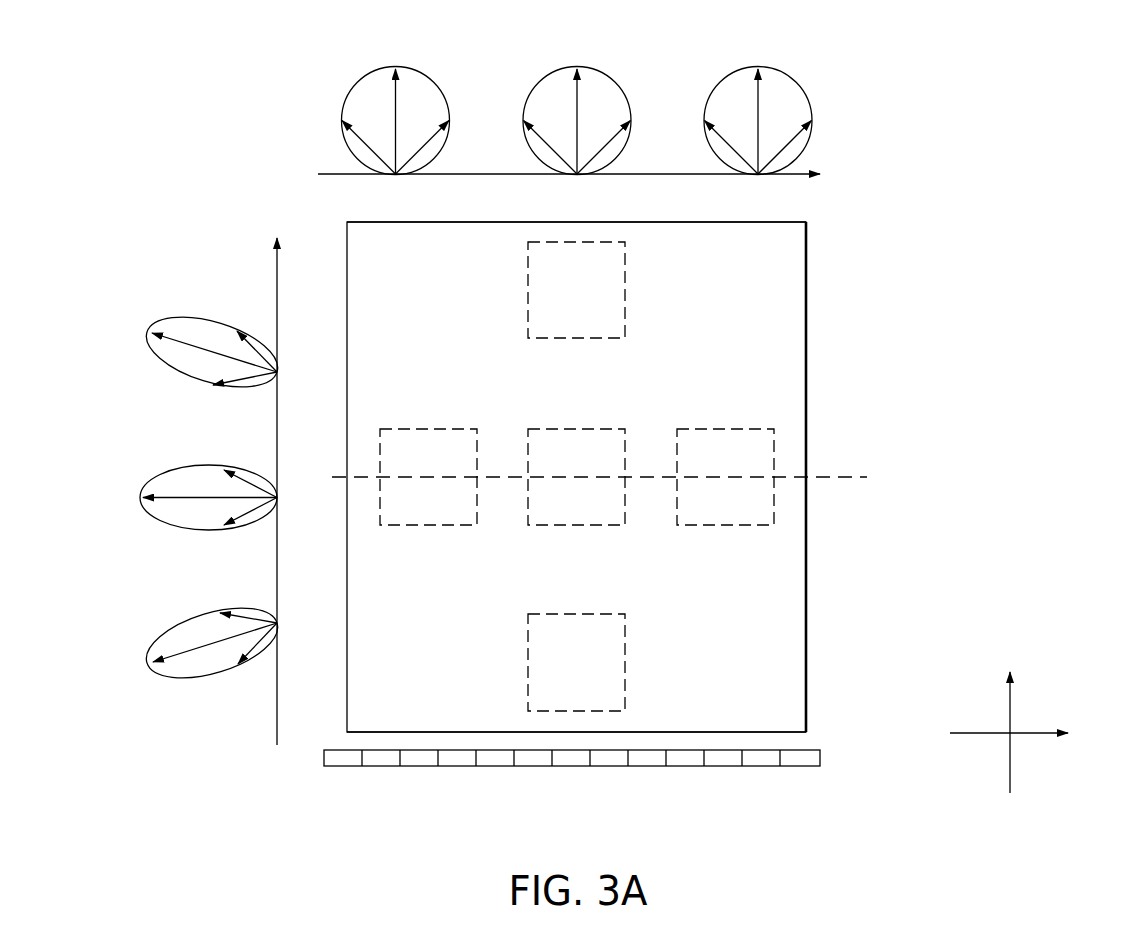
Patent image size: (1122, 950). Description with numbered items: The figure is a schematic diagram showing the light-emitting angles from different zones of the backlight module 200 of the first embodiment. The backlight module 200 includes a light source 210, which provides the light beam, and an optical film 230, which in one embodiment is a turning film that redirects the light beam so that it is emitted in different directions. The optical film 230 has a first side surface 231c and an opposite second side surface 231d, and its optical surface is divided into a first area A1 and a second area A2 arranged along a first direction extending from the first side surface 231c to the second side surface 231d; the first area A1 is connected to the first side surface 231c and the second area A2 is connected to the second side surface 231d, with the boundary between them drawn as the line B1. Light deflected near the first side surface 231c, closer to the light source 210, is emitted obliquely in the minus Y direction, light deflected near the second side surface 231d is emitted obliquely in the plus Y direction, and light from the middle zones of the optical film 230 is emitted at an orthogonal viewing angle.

The backlight module 200 is at (104, 93).
The light source 210 is at (800, 767).
The optical film 230 is at (385, 697).
The first side surface 231c is at (758, 733).
The second side surface 231d is at (775, 222).
The first area A1 is at (820, 488).
The second area A2 is at (820, 233).
The center line B1 is at (840, 477).